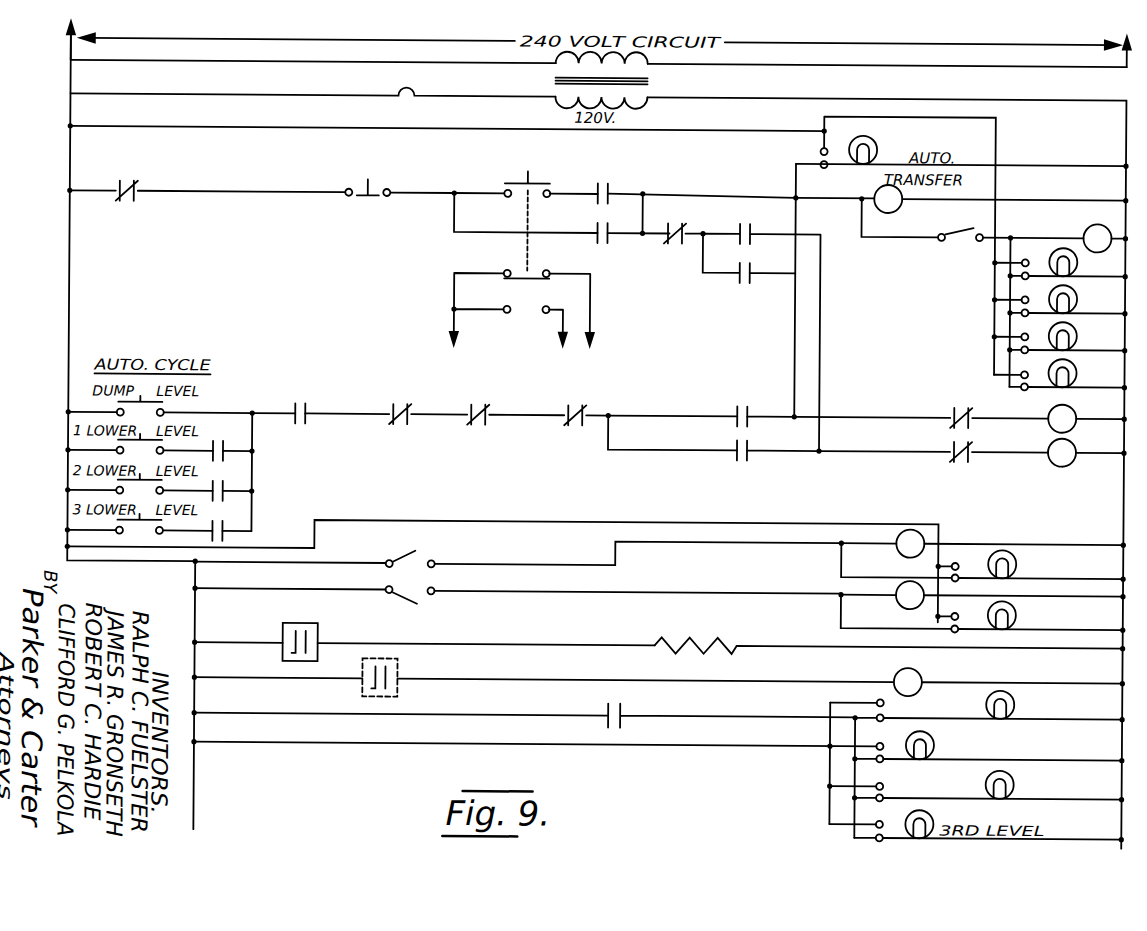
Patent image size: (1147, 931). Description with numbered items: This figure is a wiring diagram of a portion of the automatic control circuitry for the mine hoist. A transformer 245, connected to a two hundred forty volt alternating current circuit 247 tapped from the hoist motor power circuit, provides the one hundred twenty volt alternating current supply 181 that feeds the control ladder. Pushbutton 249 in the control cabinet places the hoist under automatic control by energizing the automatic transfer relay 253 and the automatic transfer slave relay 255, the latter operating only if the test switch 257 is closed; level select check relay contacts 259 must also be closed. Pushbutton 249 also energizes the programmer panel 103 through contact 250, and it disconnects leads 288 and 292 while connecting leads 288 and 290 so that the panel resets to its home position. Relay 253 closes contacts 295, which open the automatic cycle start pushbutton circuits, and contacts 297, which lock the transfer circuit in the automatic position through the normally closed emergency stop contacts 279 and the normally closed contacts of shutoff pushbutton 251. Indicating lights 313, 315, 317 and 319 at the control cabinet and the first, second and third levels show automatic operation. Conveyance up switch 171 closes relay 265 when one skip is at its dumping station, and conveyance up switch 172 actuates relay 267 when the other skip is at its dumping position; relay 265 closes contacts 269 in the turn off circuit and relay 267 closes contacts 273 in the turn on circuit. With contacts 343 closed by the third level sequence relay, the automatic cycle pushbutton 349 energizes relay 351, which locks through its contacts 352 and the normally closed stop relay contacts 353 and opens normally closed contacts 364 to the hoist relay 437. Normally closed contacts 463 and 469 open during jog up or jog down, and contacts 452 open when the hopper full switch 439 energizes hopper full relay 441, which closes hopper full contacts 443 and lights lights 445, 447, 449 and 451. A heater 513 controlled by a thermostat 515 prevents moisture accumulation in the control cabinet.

The 240 volt alternating current circuit 247 is at (116, 70).
The 120 volt alternating current supply 181 is at (302, 84).
The transformer 245 is at (650, 82).
The emergency stop contacts 279 is at (138, 188).
The pushbutton 251 is at (367, 202).
The pushbutton 249 is at (515, 181).
The level select check relay contacts 259 is at (610, 186).
The contacts 297 is at (594, 230).
The normally closed contacts 353 is at (683, 248).
The contacts 352 is at (752, 230).
The contact 250 is at (517, 269).
The lead 288 is at (451, 317).
The lead 290 is at (557, 320).
The lead 292 is at (591, 318).
The programmer panel 103 is at (540, 353).
The automatic transfer relay 253 is at (877, 206).
The test switch 257 is at (965, 226).
The automatic transfer slave relay 255 is at (1089, 229).
The indicating light 313 is at (1077, 261).
The indicating light 315 is at (1077, 298).
The indicating light 317 is at (1077, 335).
The indicating light 319 is at (1077, 372).
The automatic cycle pushbutton 349 is at (148, 523).
The contacts 343 is at (228, 520).
The contacts 295 is at (311, 400).
The normally closed contacts 463 is at (403, 402).
The normally closed contacts 469 is at (487, 402).
The normally closed contacts 452 is at (580, 402).
The contacts 273 is at (750, 392).
The contacts 269 is at (741, 464).
The normally closed contacts 364 is at (959, 404).
The hoist relay 437 is at (1050, 428).
The relay 351 is at (1052, 464).
The conveyance up switch 171 is at (418, 555).
The conveyance up switch 172 is at (398, 603).
The relay 265 is at (900, 552).
The relay 267 is at (900, 604).
The thermostat 515 is at (284, 656).
The heater 513 is at (730, 658).
The hopper full switch 439 is at (364, 695).
The hopper full relay 441 is at (901, 670).
The hopper full contacts 443 is at (620, 728).
The light 445 is at (988, 701).
The light 447 is at (935, 734).
The light 449 is at (993, 781).
The light 451 is at (926, 800).